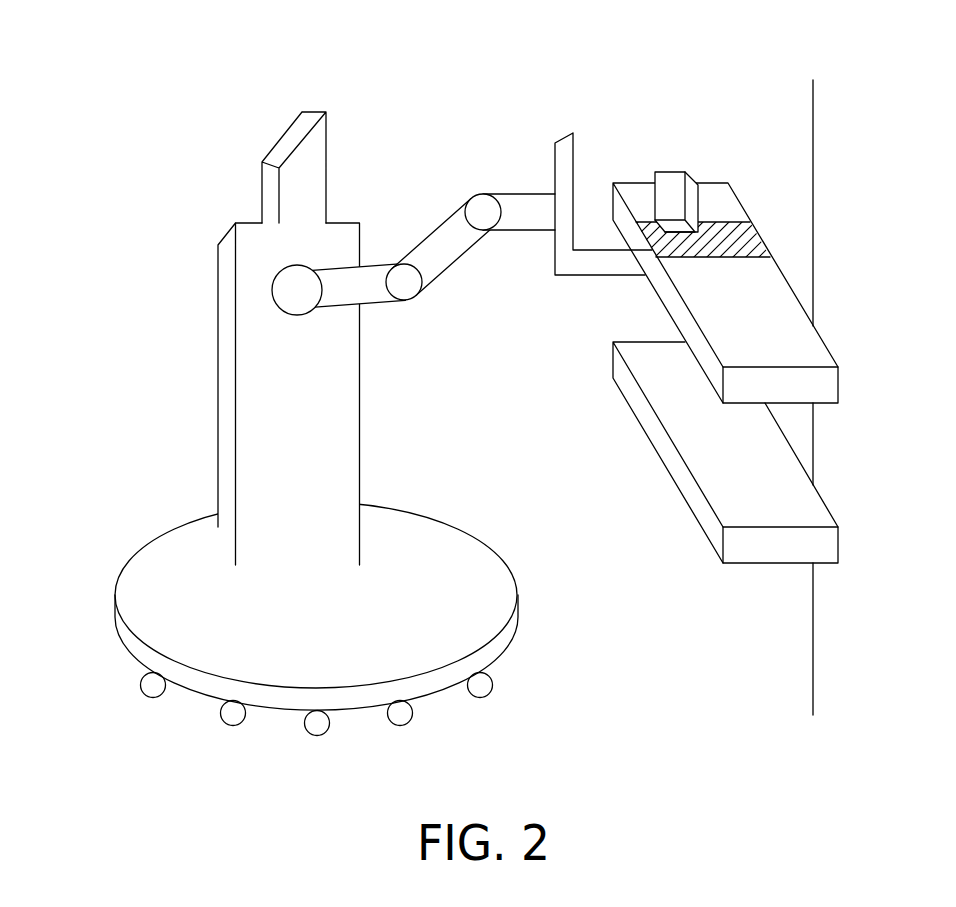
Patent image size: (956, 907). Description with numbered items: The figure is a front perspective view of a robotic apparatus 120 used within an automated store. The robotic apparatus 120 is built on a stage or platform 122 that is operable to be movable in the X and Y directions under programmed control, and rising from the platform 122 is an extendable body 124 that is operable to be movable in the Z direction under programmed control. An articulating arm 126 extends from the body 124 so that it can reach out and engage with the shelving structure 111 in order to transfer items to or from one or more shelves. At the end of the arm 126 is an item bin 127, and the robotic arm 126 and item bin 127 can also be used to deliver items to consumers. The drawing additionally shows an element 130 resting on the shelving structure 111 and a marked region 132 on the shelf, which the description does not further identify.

The shelving structure 111 is at (668, 472).
The robotic apparatus 120 is at (365, 373).
The stage or platform 122 is at (180, 588).
The extendable body 124 is at (235, 290).
The articulating arm 126 is at (440, 245).
The item bin 127 is at (592, 165).
The object 130 is at (672, 190).
The hatched pad area 132 is at (635, 258).